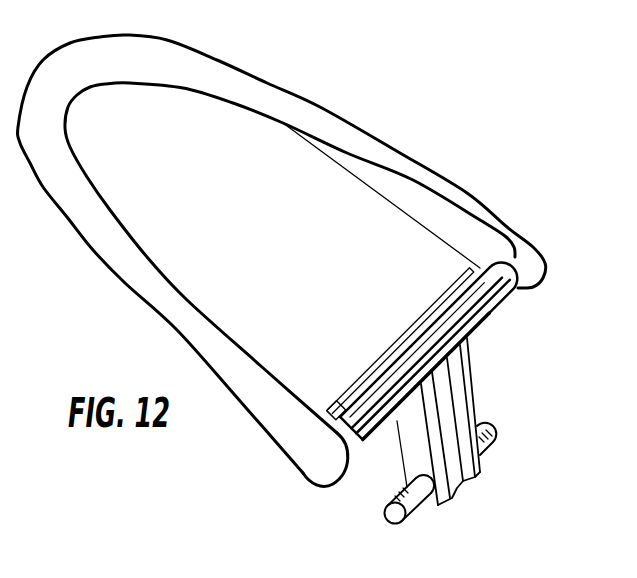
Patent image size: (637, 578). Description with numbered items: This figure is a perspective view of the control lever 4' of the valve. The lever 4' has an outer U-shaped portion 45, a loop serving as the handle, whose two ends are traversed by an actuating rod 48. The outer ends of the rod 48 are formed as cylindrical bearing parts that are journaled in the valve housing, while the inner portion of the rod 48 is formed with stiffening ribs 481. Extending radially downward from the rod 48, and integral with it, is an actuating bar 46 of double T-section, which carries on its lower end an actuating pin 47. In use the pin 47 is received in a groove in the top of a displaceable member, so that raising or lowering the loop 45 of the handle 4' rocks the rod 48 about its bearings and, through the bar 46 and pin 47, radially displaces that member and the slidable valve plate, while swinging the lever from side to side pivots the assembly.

The outer U-shaped portion 45 is at (403, 162).
The control lever 4' is at (544, 180).
The actuating rod 48 is at (363, 405).
The stiffening ribs 481 is at (425, 325).
The actuating bar 46 is at (437, 387).
The actuating pin 47 is at (494, 433).